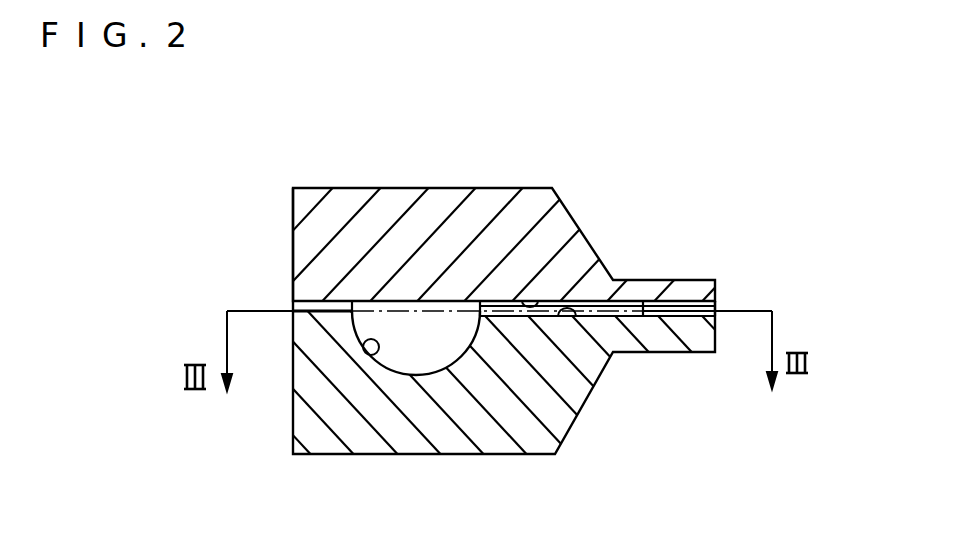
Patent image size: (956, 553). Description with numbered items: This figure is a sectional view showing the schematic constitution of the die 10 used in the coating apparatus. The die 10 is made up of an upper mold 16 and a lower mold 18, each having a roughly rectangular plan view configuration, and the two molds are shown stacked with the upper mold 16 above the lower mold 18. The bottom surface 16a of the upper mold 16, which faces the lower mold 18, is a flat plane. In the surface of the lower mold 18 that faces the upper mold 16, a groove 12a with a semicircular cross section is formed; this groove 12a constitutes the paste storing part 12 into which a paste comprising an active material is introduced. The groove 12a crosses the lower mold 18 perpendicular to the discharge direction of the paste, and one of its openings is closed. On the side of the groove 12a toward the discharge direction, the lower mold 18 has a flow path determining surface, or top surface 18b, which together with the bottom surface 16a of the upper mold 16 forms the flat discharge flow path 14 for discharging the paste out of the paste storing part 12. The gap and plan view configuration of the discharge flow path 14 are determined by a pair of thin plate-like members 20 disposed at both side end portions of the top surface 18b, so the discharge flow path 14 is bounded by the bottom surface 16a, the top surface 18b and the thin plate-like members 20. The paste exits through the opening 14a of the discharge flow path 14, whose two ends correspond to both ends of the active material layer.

The die 10 is at (709, 164).
The paste storing part 12 is at (433, 350).
The groove 12a is at (365, 356).
The discharge flow path 14 is at (625, 305).
The opening 14a is at (716, 298).
The upper mold 16 is at (508, 180).
The bottom surface 16a is at (543, 297).
The lower mold 18 is at (566, 436).
The flow path determining surface 18b is at (568, 310).
The thin plate-like member 20 is at (489, 306).